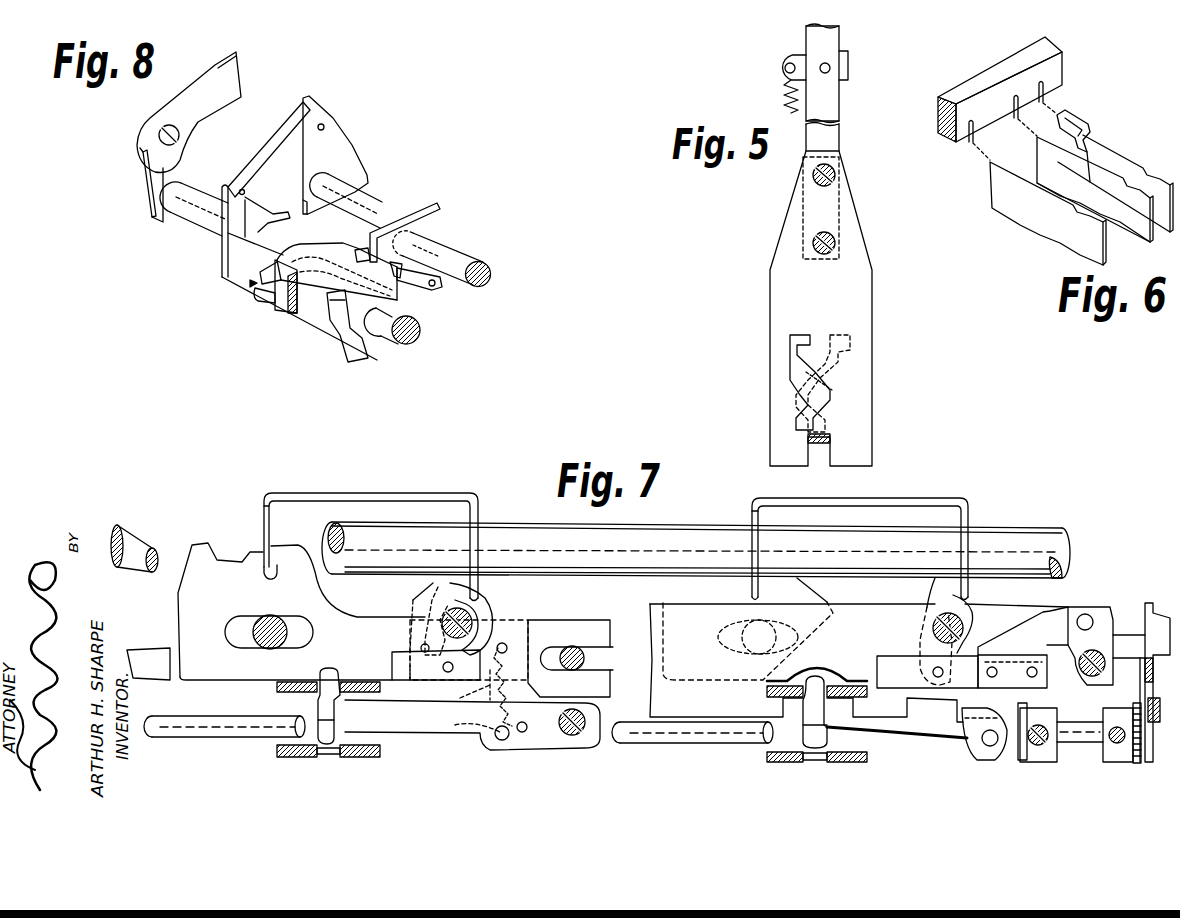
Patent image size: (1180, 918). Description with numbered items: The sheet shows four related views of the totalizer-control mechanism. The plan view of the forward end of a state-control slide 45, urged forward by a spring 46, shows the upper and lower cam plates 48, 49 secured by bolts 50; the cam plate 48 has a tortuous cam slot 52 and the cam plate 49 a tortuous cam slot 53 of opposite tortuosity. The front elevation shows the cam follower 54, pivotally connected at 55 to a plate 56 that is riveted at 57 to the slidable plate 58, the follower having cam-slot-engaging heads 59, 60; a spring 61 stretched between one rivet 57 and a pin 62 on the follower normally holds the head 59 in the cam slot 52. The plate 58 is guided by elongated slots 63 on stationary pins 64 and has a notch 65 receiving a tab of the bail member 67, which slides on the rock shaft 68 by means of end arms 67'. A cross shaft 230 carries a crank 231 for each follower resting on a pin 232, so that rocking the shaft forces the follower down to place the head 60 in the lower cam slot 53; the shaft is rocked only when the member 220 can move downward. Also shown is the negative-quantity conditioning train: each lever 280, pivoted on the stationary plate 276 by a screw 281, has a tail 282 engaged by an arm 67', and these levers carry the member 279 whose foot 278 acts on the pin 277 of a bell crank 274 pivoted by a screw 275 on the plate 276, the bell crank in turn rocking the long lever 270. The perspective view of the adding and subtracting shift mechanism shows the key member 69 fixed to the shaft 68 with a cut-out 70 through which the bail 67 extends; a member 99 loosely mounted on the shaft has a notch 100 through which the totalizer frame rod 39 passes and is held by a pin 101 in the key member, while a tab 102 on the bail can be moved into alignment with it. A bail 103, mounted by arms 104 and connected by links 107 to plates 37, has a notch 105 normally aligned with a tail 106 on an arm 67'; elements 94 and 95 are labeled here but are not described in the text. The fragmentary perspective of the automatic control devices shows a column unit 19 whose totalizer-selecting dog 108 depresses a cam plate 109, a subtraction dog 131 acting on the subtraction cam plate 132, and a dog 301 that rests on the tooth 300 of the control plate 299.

In FIG. 8, the lever arm 94 is at (218, 62).
In FIG. 8, the lever pivot boss 95 is at (187, 160).
In FIG. 8, the links 107 is at (265, 146).
In FIG. 8, the plates 37 is at (340, 138).
In FIG. 8, the arms 104 is at (262, 210).
In FIG. 8, the member 99 is at (396, 215).
In FIG. 8, the notch 100 is at (436, 216).
In FIG. 8, the rod 39 is at (460, 252).
In FIG. 8, the bail 103 is at (226, 280).
In FIG. 8, the notch 105 is at (257, 282).
In FIG. 8, the tail 106 is at (264, 304).
In FIG. 8, the bail member 67 is at (328, 259).
In FIG. 7, the bail member 67 is at (616, 532).
In FIG. 8, the tab 102 is at (362, 248).
In FIG. 8, the cut-out 70 is at (391, 270).
In FIG. 8, the pin 101 is at (437, 285).
In FIG. 8, the rock shaft 68 is at (420, 333).
In FIG. 7, the rock shaft 68 is at (125, 525).
In FIG. 8, the key member 69 is at (375, 352).
In FIG. 5, the state-control slide 45 is at (806, 36).
In FIG. 5, the spring 46 is at (782, 93).
In FIG. 5, the cam plate 48 is at (772, 265).
In FIG. 7, the cam plate 48 is at (277, 688).
In FIG. 5, the bolts 50 is at (826, 188).
In FIG. 5, the cam slot 52 is at (798, 335).
In FIG. 5, the cam slot 53 is at (836, 372).
In FIG. 7, the cam slot 53 is at (330, 757).
In FIG. 5, the cam follower 54 is at (830, 441).
In FIG. 7, the cam follower 54 is at (428, 734).
In FIG. 6, the column units 19 is at (1052, 40).
In FIG. 6, the totalizer-selecting dogs 108 is at (968, 145).
In FIG. 6, the subtraction dog 131 is at (1012, 115).
In FIG. 6, the column unit dog 301 is at (1046, 98).
In FIG. 6, the tooth 300 is at (1075, 119).
In FIG. 6, the control plate 299 is at (1128, 160).
In FIG. 6, the subtraction cam plate 132 is at (1037, 150).
In FIG. 6, the cam plate 109 is at (990, 195).
In FIG. 7, the end arms 67' is at (488, 519).
In FIG. 7, the notch 65 is at (266, 575).
In FIG. 7, the slidable plate 58 is at (335, 612).
In FIG. 7, the elongated slots 63 is at (235, 650).
In FIG. 7, the stationary pins 64 is at (271, 626).
In FIG. 7, the member 279 is at (155, 650).
In FIG. 7, the levers 280 is at (920, 654).
In FIG. 7, the screw 281 is at (476, 620).
In FIG. 7, the stationary plate 276 is at (490, 607).
In FIG. 7, the tail 282 is at (436, 591).
In FIG. 7, the rivets 57 is at (420, 646).
In FIG. 7, the follower head 59 is at (318, 692).
In FIG. 7, the follower head 60 is at (334, 722).
In FIG. 7, the cam plate 49 is at (277, 753).
In FIG. 7, the cross shaft 230 is at (195, 738).
In FIG. 7, the spring 61 is at (478, 694).
In FIG. 7, the plate 56 is at (490, 708).
In FIG. 7, the pins 232 is at (502, 740).
In FIG. 7, the pin 62 is at (524, 733).
In FIG. 7, the pivot 55 is at (580, 735).
In FIG. 7, the bell crank 274 is at (1070, 666).
In FIG. 7, the foot 278 is at (1054, 614).
In FIG. 7, the lever 270 is at (1147, 745).
In FIG. 7, the pin 277 is at (1086, 613).
In FIG. 7, the screw 275 is at (1092, 678).
In FIG. 7, the member 220 is at (1145, 610).
In FIG. 7, the crank 231 is at (968, 745).